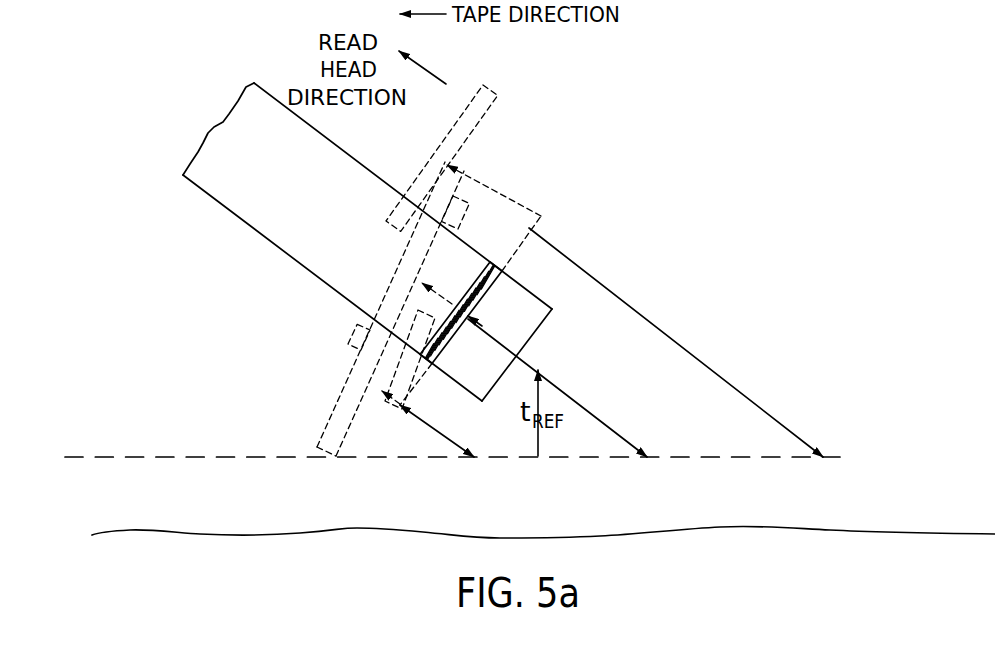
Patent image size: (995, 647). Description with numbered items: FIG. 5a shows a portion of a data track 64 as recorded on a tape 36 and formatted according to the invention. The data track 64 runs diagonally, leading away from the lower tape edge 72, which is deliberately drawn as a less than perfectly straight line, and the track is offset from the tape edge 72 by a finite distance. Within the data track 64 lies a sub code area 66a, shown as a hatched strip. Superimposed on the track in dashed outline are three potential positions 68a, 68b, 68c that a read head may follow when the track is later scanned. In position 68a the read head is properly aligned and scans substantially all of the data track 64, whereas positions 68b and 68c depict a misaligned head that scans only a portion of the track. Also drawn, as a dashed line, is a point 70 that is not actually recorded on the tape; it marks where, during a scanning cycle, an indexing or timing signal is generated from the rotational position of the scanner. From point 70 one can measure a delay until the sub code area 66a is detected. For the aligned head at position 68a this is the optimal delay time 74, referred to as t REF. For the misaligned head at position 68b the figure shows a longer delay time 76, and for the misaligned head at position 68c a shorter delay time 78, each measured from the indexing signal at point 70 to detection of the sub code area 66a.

The tape 36 is at (712, 177).
The data track 64 is at (308, 208).
The sub code area 66a is at (489, 283).
The read head position 68a is at (468, 213).
The read head position 68b is at (495, 100).
The read head position 68c is at (360, 415).
The indexing signal point 70 is at (290, 460).
The tape edge 72 is at (352, 530).
The optimal delay time 74 is at (567, 392).
The longer delay time 76 is at (658, 323).
The shorter delay time 78 is at (433, 423).